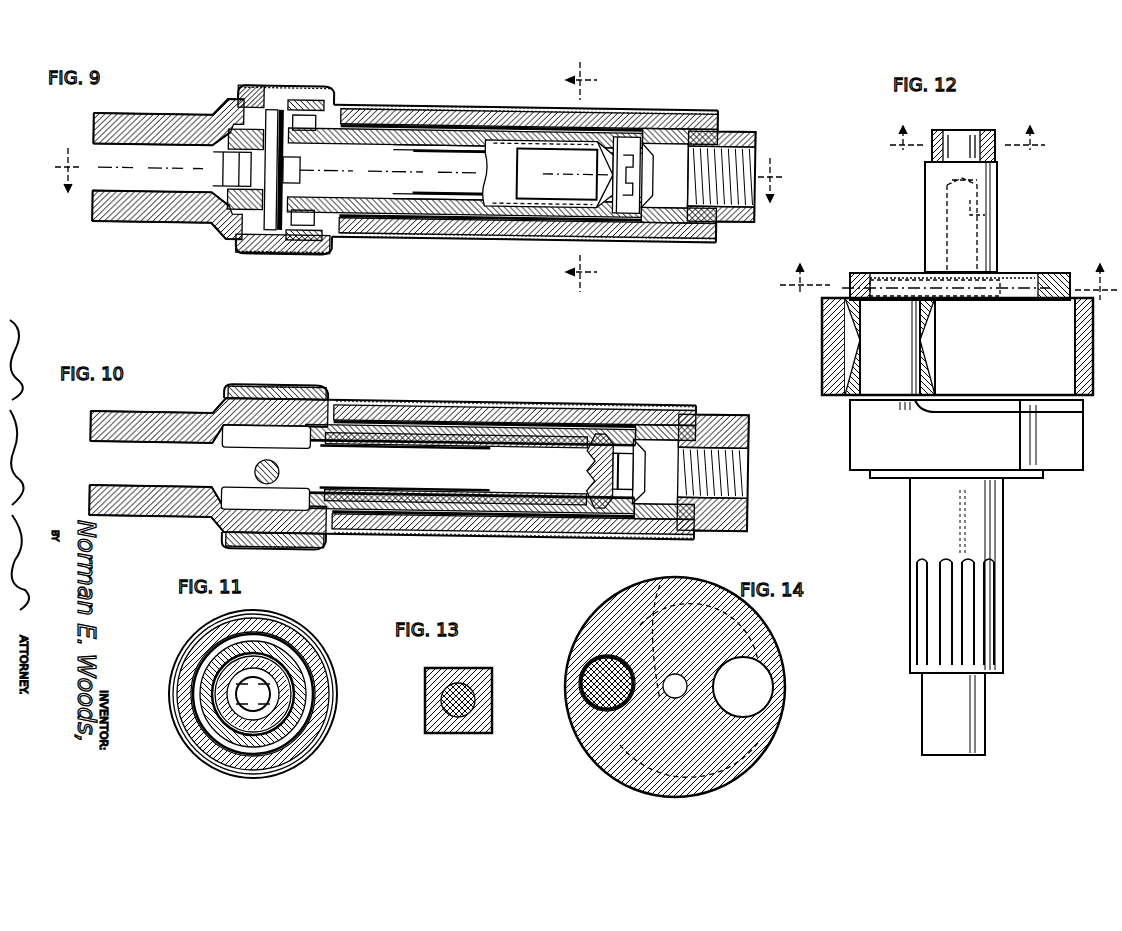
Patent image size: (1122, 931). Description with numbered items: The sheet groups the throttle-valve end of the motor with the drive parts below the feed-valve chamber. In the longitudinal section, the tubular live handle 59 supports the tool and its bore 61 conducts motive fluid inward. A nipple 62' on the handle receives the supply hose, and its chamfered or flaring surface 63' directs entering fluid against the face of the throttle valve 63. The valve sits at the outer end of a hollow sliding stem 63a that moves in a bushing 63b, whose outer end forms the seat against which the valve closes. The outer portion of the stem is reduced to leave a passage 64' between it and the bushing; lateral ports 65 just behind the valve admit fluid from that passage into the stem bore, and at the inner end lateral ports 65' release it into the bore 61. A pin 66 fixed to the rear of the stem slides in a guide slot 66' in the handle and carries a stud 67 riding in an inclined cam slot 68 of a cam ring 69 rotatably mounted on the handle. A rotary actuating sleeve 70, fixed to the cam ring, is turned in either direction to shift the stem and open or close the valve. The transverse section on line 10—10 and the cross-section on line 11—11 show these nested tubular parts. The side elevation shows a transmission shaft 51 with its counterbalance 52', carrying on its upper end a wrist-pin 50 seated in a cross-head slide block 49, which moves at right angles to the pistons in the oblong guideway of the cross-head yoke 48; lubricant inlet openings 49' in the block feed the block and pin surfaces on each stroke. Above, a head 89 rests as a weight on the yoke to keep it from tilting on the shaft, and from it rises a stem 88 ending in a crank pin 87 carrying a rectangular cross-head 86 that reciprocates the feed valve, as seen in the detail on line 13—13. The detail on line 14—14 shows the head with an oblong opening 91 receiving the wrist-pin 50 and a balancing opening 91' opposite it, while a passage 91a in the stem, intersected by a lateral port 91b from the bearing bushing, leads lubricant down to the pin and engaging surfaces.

In FIG. 9, the tubular live handle 59 is at (149, 165).
In FIG. 10, the tubular live handle 59 is at (189, 464).
In FIG. 11, the tubular live handle 59 is at (300, 640).
In FIG. 9, the bore of live handle 61 is at (150, 171).
In FIG. 10, the bore of live handle 61 is at (146, 473).
In FIG. 9, the nipple 62' is at (725, 170).
In FIG. 10, the nipple 62' is at (713, 469).
In FIG. 9, the throttle valve 63 is at (624, 211).
In FIG. 10, the throttle valve 63 is at (612, 448).
In FIG. 9, the chamfered or flaring surface 63' is at (679, 152).
In FIG. 10, the chamfered or flaring surface 63' is at (511, 458).
In FIG. 9, the hollow sliding stem 63a is at (491, 151).
In FIG. 10, the hollow sliding stem 63a is at (484, 453).
In FIG. 9, the bushing 63b is at (516, 216).
In FIG. 10, the bushing 63b is at (469, 512).
In FIG. 11, the bushing 63b is at (315, 670).
In FIG. 9, the passage 64' is at (479, 218).
In FIG. 10, the passage 64' is at (429, 521).
In FIG. 11, the passage 64' is at (211, 694).
In FIG. 9, the lateral ports 65 is at (548, 148).
In FIG. 10, the lateral ports 65 is at (462, 484).
In FIG. 11, the lateral ports 65 is at (230, 689).
In FIG. 9, the lateral ports 65' is at (218, 193).
In FIG. 10, the lateral ports 65' is at (237, 458).
In FIG. 9, the pin 66 is at (371, 171).
In FIG. 10, the pin 66 is at (292, 474).
In FIG. 9, the guide slot 66' is at (525, 159).
In FIG. 9, the stud 67 is at (313, 153).
In FIG. 9, the cam slot 68 is at (283, 158).
In FIG. 9, the cam ring 69 is at (282, 259).
In FIG. 10, the cam ring 69 is at (294, 459).
In FIG. 9, the rotary valve actuating sleeve 70 is at (465, 142).
In FIG. 10, the rotary valve actuating sleeve 70 is at (470, 446).
In FIG. 11, the rotary valve actuating sleeve 70 is at (195, 672).
In FIG. 9, the section line 10— 10 is at (421, 175).
In FIG. 9, the section line 11— 11 is at (581, 177).
In FIG. 12, the section line 13— 13 is at (965, 140).
In FIG. 12, the section line 14— 14 is at (940, 283).
In FIG. 12, the cross-head yoke 48 is at (1080, 385).
In FIG. 12, the cross-head slide block 49 is at (916, 346).
In FIG. 12, the lubricant inlet openings 49' is at (925, 346).
In FIG. 14, the wrist-pin 50 is at (587, 690).
In FIG. 12, the wrist-pin 50 is at (890, 346).
In FIG. 12, the transmission shaft 51 is at (1003, 497).
In FIG. 12, the counterbalance 52' is at (981, 657).
In FIG. 13, the rectangular cross-head 86 is at (425, 692).
In FIG. 12, the rectangular cross-head 86 is at (995, 130).
In FIG. 13, the crank or wrist-pin 87 is at (430, 722).
In FIG. 12, the crank or wrist-pin 87 is at (955, 137).
In FIG. 14, the stem 88 is at (600, 762).
In FIG. 12, the stem 88 is at (1000, 237).
In FIG. 14, the head 89 is at (780, 658).
In FIG. 12, the head 89 is at (1060, 275).
In FIG. 14, the oblong opening 91 is at (587, 704).
In FIG. 12, the oblong opening 91 is at (916, 304).
In FIG. 14, the balancing opening 91' is at (769, 690).
In FIG. 12, the balancing opening 91' is at (960, 305).
In FIG. 14, the passage 91a is at (650, 600).
In FIG. 12, the passage 91a is at (985, 213).
In FIG. 12, the lateral port 91b is at (945, 225).